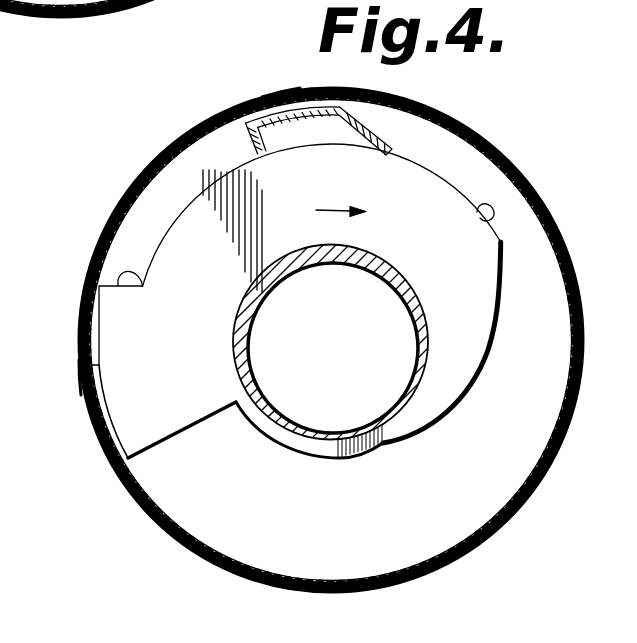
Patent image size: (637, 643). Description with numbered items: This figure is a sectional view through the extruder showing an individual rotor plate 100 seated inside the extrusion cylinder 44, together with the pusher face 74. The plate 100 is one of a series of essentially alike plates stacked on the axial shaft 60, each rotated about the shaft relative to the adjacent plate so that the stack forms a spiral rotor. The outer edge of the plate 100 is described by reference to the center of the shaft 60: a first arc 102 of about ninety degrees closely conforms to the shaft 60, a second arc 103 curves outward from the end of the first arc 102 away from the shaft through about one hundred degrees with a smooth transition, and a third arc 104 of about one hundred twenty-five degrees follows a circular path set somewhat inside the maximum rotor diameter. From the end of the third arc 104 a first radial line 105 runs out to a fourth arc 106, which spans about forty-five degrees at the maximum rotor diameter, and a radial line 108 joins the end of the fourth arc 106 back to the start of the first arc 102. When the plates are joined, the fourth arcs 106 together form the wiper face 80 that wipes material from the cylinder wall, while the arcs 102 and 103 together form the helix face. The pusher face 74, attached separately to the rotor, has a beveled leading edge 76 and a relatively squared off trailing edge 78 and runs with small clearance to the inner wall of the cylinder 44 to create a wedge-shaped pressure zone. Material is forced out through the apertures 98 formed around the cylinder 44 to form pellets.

The extrusion cylinder 44 is at (513, 171).
The axial shaft 60 is at (373, 412).
The pusher face 74 is at (329, 102).
The beveled leading edge 76 is at (369, 141).
The squared off trailing edge 78 is at (258, 151).
The wiper face 80 is at (79, 375).
The apertures 98 is at (275, 97).
The plate 100 is at (323, 187).
The first arc 102 is at (389, 443).
The second arc 103 is at (458, 382).
The third arc 104 is at (477, 212).
The first radial line 105 is at (140, 291).
The fourth arc 106 is at (107, 418).
The radial line 108 is at (180, 436).